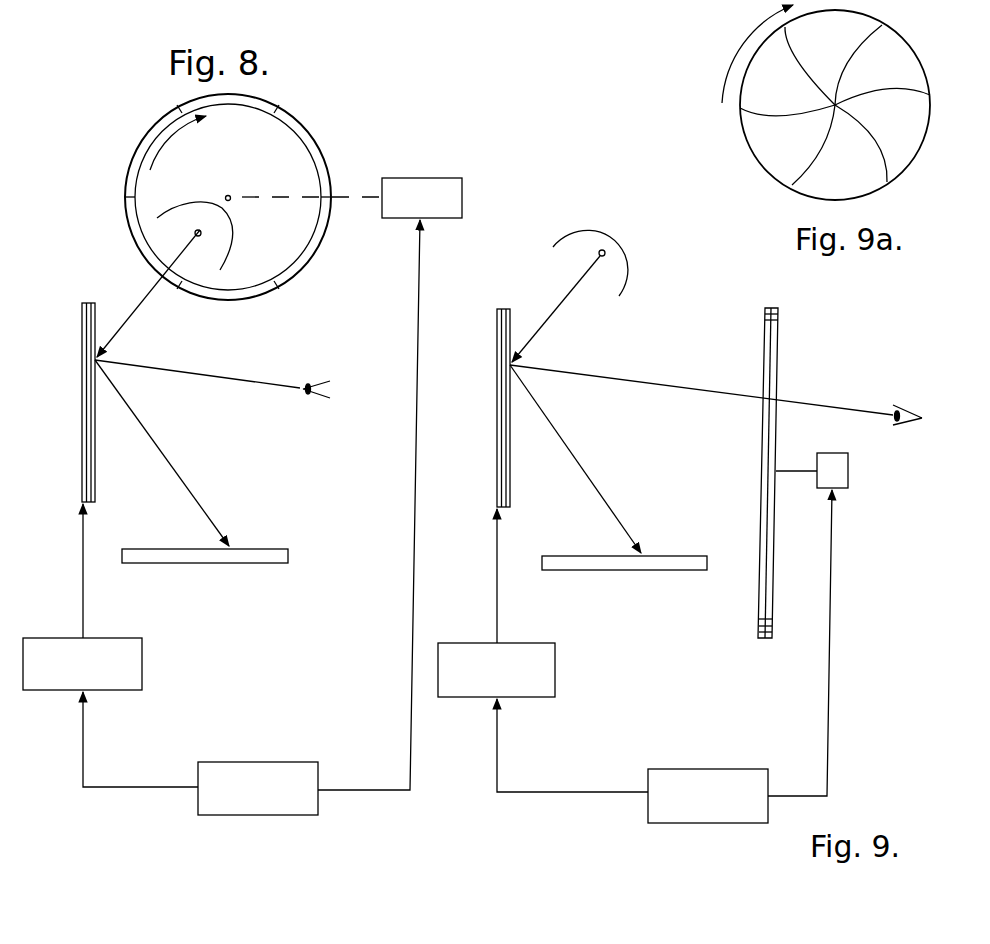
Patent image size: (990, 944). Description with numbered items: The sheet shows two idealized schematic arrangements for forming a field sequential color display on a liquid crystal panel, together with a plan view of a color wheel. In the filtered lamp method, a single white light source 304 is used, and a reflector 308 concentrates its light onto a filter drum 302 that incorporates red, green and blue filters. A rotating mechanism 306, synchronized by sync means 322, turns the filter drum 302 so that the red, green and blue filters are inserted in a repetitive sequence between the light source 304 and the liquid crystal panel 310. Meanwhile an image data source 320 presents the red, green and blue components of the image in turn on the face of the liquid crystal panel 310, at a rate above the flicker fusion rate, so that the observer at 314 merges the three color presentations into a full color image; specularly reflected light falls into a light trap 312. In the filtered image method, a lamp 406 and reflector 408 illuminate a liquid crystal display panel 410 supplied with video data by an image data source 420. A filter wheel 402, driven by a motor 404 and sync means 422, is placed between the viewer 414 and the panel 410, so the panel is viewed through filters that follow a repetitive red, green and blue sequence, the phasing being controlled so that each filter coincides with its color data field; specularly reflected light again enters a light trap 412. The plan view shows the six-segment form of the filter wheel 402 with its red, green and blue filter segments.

In FIG. 8, the filter drum 302 is at (328, 163).
In FIG. 8, the white light source 304 is at (201, 233).
In FIG. 8, the rotating mechanism 306 is at (452, 181).
In FIG. 8, the reflector 308 is at (188, 202).
In FIG. 8, the liquid crystal panel 310 is at (80, 472).
In FIG. 8, the light trap 312 is at (280, 549).
In FIG. 8, the observer 314 is at (320, 385).
In FIG. 8, the image data source 320 is at (133, 645).
In FIG. 8, the sync means 322 is at (312, 768).
In FIG. 9A, the filter wheel 402 is at (903, 172).
In FIG. 9, the filter wheel 402 is at (763, 334).
In FIG. 9, the motor 404 is at (850, 477).
In FIG. 9, the lamp 406 is at (599, 254).
In FIG. 9, the reflector 408 is at (628, 280).
In FIG. 9, the liquid crystal display panel 410 is at (496, 483).
In FIG. 9, the light trap 412 is at (698, 572).
In FIG. 9, the viewer 414 is at (913, 407).
In FIG. 9, the image data source 420 is at (552, 648).
In FIG. 9, the sync means 422 is at (655, 818).